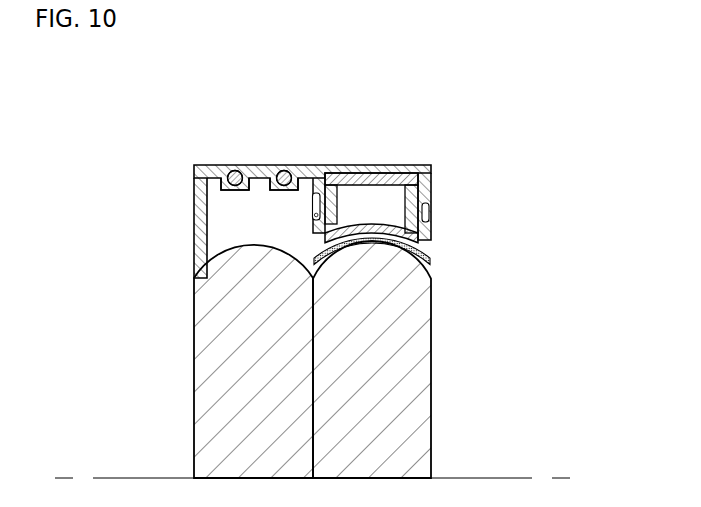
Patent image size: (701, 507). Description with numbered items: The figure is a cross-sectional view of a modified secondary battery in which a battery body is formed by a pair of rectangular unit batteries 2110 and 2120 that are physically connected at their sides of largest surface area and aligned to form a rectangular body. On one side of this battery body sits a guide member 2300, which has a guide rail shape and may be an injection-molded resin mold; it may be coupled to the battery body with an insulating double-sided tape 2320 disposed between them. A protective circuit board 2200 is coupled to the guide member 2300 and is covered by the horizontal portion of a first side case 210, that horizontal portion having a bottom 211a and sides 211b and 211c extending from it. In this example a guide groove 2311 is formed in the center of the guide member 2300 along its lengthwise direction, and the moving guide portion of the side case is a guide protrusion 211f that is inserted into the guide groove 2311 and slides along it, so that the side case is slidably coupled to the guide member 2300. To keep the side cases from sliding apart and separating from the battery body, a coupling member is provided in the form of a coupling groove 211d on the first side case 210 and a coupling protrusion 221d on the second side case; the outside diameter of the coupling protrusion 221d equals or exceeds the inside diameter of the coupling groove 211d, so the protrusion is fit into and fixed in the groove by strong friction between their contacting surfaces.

The first side case 210 is at (307, 178).
The bottom 211a is at (293, 167).
The side 211b is at (193, 218).
The side 211c is at (314, 167).
The coupling groove 211d is at (222, 188).
The guide protrusion 211f is at (321, 221).
The coupling protrusion 221d is at (235, 165).
The rectangular unit battery 2110 is at (205, 342).
The rectangular unit battery 2120 is at (423, 343).
The protective circuit board 2200 is at (407, 166).
The guide member 2300 is at (410, 216).
The guide groove 2311 is at (432, 217).
The double-sided tape 2320 is at (420, 250).